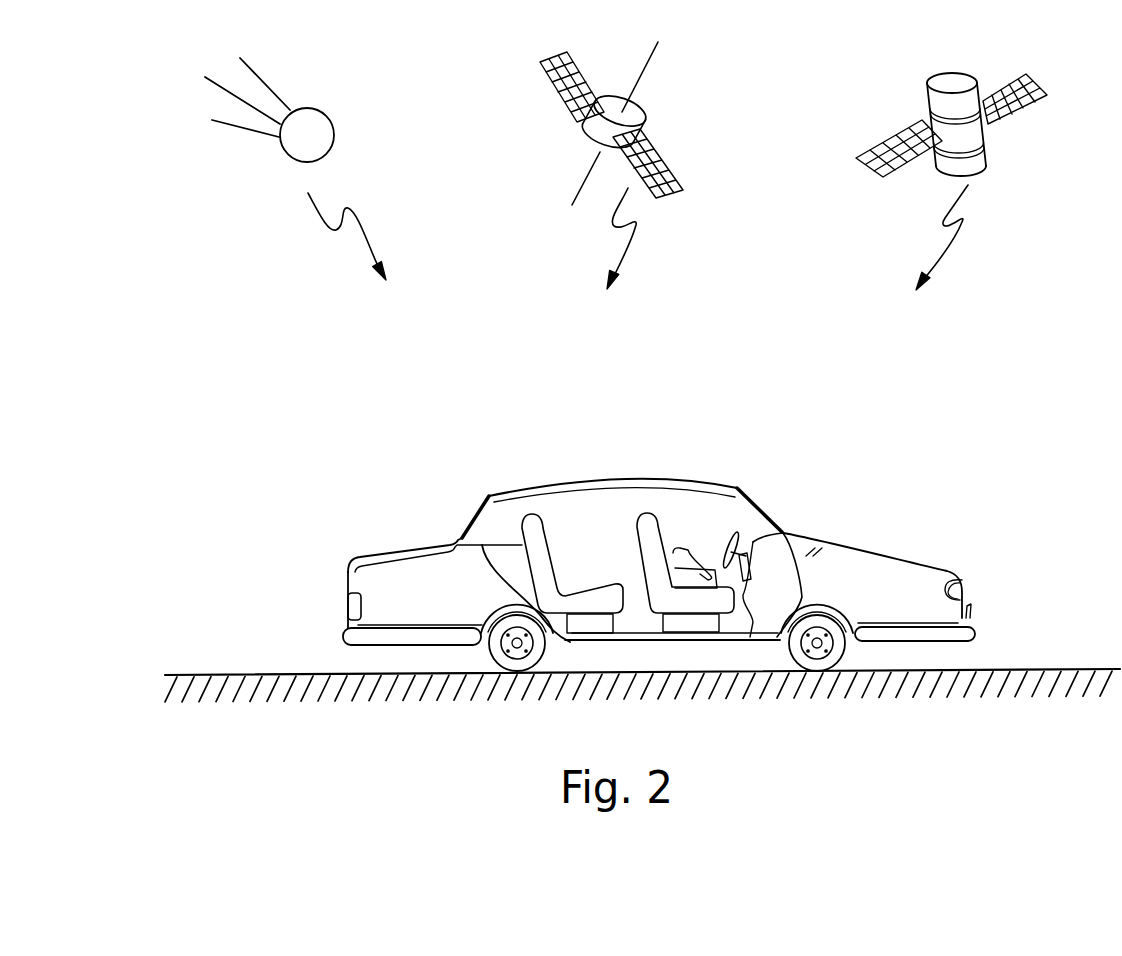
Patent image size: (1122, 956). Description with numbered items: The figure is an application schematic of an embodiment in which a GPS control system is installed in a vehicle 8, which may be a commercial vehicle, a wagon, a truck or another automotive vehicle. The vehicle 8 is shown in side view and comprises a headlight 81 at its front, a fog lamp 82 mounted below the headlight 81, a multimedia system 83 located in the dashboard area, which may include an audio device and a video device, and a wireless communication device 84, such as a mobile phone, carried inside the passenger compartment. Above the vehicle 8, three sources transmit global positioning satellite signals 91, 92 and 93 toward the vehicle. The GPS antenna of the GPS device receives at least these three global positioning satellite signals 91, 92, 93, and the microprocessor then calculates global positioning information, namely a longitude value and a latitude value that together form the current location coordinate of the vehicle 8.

The vehicle 8 is at (705, 552).
The headlight 81 is at (960, 584).
The fog lamp 82 is at (973, 613).
The multimedia system 83 is at (753, 560).
The wireless communication device 84 is at (687, 566).
The global positioning satellite signal 91 is at (333, 120).
The global positioning satellite signal 92 is at (644, 120).
The global positioning satellite signal 93 is at (938, 103).